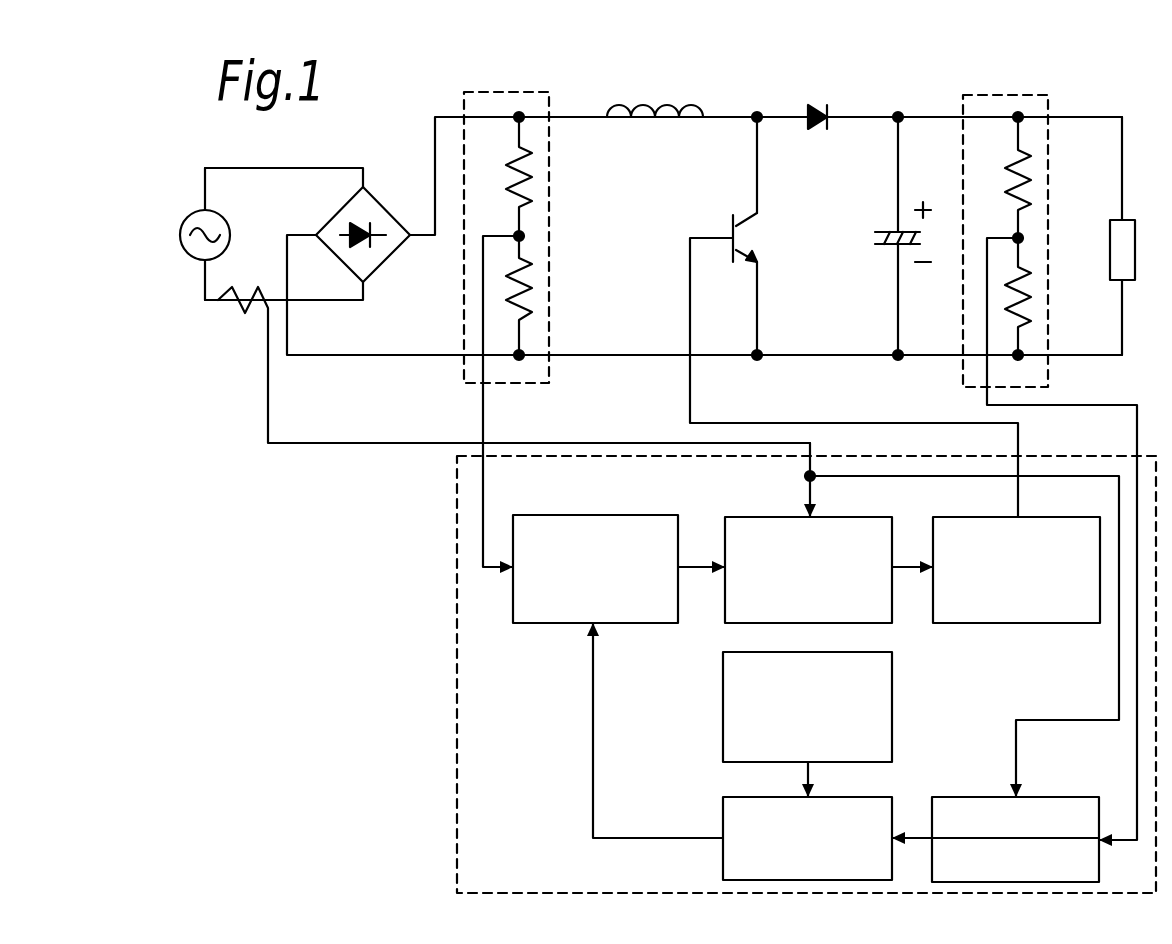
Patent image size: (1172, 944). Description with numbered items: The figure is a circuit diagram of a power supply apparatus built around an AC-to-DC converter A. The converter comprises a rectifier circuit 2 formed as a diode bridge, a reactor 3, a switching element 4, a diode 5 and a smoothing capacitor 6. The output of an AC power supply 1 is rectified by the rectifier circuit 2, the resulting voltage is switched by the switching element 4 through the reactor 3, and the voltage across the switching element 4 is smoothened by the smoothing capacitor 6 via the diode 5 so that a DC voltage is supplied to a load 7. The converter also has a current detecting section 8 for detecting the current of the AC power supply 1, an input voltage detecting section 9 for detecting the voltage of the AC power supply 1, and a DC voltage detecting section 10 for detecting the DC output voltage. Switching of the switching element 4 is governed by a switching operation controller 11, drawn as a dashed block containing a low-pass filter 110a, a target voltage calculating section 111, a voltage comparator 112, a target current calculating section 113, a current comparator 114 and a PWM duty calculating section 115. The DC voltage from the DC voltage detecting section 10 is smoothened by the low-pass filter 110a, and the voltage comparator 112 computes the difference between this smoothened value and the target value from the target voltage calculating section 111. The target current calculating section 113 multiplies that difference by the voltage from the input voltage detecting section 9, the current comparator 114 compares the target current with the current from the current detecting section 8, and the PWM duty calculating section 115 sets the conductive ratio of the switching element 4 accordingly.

The AC power supply 1 is at (202, 209).
The rectifier circuit 2 is at (325, 227).
The reactor 3 is at (652, 103).
The switching element 4 is at (747, 242).
The diode 5 is at (813, 105).
The smoothing capacitor 6 is at (888, 252).
The load 7 is at (1130, 217).
The current detecting section 8 is at (217, 312).
The input voltage detecting section 9 is at (550, 363).
The DC voltage detecting section 10 is at (1048, 365).
The switching operation controller 11 is at (457, 622).
The AC-to-DC converter A is at (583, 103).
The low-pass filter 110a is at (1042, 797).
The target voltage calculating section 111 is at (892, 678).
The voltage comparator 112 is at (853, 797).
The target current calculating section 113 is at (590, 515).
The current comparator 114 is at (830, 517).
The PWM duty calculating section 115 is at (1030, 517).